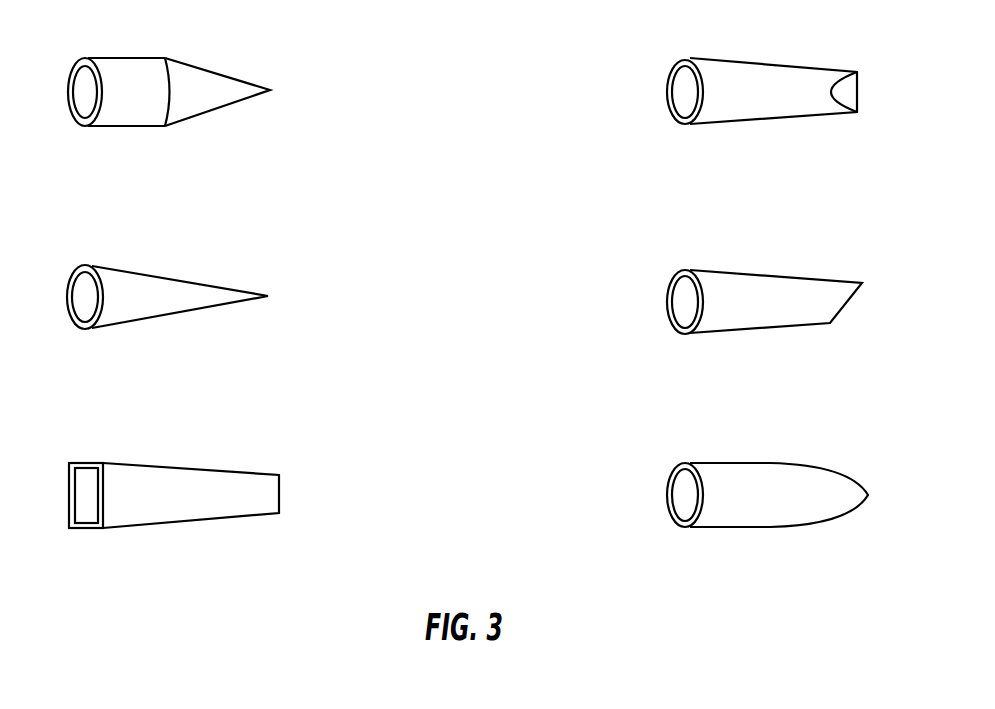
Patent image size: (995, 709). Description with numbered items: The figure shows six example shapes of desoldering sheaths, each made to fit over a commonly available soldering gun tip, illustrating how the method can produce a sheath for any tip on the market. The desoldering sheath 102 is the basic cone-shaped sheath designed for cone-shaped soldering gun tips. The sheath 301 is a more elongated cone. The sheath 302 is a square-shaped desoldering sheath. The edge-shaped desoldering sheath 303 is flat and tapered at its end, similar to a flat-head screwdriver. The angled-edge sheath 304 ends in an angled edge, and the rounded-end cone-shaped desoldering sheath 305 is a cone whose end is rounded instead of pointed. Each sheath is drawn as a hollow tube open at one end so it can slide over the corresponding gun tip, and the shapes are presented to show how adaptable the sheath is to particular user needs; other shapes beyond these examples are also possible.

The desoldering sheath 102 is at (140, 56).
The sheath 301 is at (138, 270).
The sheath 302 is at (138, 463).
The edge-shaped desoldering sheath 303 is at (738, 60).
The angled-edge sheath 304 is at (740, 270).
The rounded-end cone-shaped desoldering sheath 305 is at (740, 463).